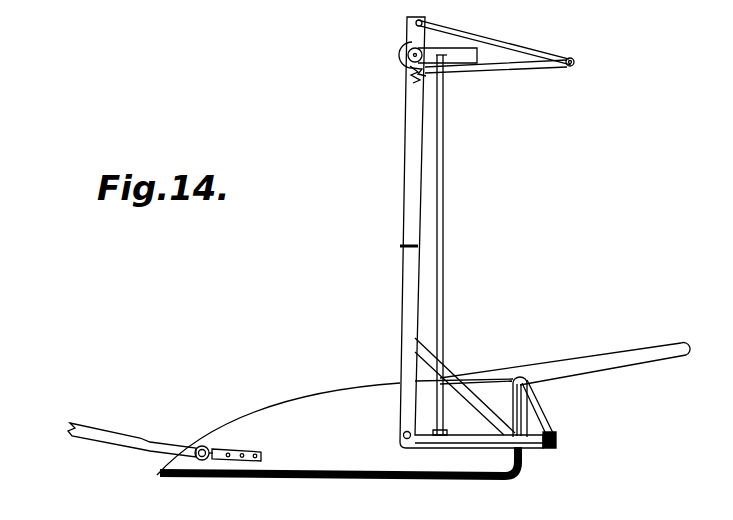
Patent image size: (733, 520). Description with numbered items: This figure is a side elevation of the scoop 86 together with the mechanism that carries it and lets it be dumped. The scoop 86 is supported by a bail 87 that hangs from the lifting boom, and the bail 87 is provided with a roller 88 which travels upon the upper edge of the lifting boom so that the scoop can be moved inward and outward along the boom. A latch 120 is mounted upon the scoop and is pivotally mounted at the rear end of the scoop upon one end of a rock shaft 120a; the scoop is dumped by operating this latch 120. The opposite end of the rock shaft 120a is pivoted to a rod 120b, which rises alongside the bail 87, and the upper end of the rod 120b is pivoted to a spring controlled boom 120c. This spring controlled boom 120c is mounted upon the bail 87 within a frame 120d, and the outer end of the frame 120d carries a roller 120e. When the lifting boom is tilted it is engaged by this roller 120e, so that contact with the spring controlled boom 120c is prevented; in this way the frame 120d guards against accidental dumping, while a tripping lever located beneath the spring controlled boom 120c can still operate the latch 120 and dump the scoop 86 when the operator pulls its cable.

The scoop 86 is at (338, 378).
The bail 87 is at (405, 217).
The roller 88 is at (403, 55).
The latch 120 is at (547, 412).
The rock shaft 120a is at (553, 443).
The rod 120b is at (469, 245).
The spring controlled boom 120c is at (470, 52).
The frame 120d is at (558, 40).
The roller 120e is at (576, 62).